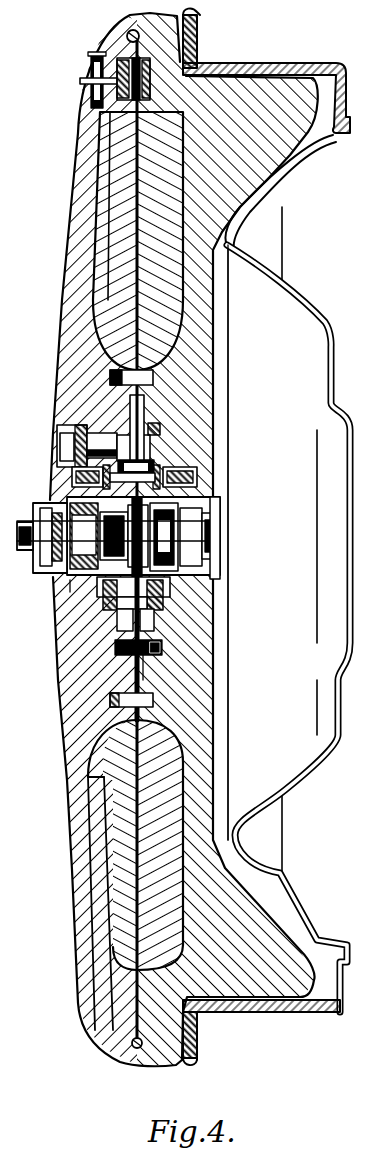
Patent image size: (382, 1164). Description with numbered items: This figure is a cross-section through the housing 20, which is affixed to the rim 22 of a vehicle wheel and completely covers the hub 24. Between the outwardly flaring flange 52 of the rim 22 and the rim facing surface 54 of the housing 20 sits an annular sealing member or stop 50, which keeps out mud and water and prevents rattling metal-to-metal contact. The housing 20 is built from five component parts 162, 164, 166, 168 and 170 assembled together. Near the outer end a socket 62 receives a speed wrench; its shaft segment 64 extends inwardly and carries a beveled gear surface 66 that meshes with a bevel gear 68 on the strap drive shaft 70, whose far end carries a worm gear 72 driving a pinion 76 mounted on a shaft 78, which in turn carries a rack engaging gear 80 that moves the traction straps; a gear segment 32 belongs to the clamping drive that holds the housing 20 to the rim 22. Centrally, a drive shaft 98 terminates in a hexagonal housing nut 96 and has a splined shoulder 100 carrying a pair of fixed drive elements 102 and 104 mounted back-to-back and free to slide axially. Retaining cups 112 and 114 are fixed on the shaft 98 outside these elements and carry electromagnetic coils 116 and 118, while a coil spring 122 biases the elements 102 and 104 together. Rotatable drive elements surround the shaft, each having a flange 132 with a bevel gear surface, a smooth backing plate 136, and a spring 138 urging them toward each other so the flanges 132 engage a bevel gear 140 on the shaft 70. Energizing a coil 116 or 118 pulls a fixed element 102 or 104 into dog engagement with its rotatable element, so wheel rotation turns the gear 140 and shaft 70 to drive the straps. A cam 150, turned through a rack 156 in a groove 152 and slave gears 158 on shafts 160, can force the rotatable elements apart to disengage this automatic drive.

The housing 20 is at (64, 205).
The rim 22 is at (280, 66).
The hub 24 is at (323, 318).
The gear segment 32 is at (110, 702).
The sealing member or stop 50 is at (198, 33).
The outwardly flaring flange 52 is at (198, 60).
The rim facing surface 54 is at (198, 14).
The socket 62 is at (60, 435).
The shaft segment 64 is at (100, 450).
The beveled gear surface 66 is at (128, 440).
The bevel gear 68 is at (160, 445).
The strap drive shaft 70 is at (146, 300).
The worm gear 72 is at (140, 44).
The pinion 76 is at (152, 93).
The shaft 78 is at (92, 80).
The rack engaging gear 80 is at (95, 104).
The hexagonal housing nut 96 is at (27, 524).
The drive shaft 98 is at (215, 548).
The splined shoulder 100 is at (60, 566).
The drive element 102 is at (104, 592).
The drive element 104 is at (200, 575).
The retaining cup 112 is at (70, 592).
The retaining cup 114 is at (190, 568).
The electromagnetic coil 116 is at (78, 510).
The electromagnetic coil 118 is at (205, 503).
The coil spring 122 is at (185, 531).
The flange 132 is at (160, 606).
The backing plate 136 is at (100, 588).
The spring 138 is at (72, 478).
The bevel gear 140 is at (155, 470).
The cam 150 is at (120, 612).
The groove 152 is at (154, 380).
The rack 156 is at (160, 652).
The slave gear 158 is at (146, 672).
The shaft 160 is at (128, 638).
The housing component part 162 is at (80, 897).
The housing component part 164 is at (112, 1052).
The housing component part 166 is at (115, 826).
The housing component part 168 is at (180, 935).
The housing component part 170 is at (200, 790).